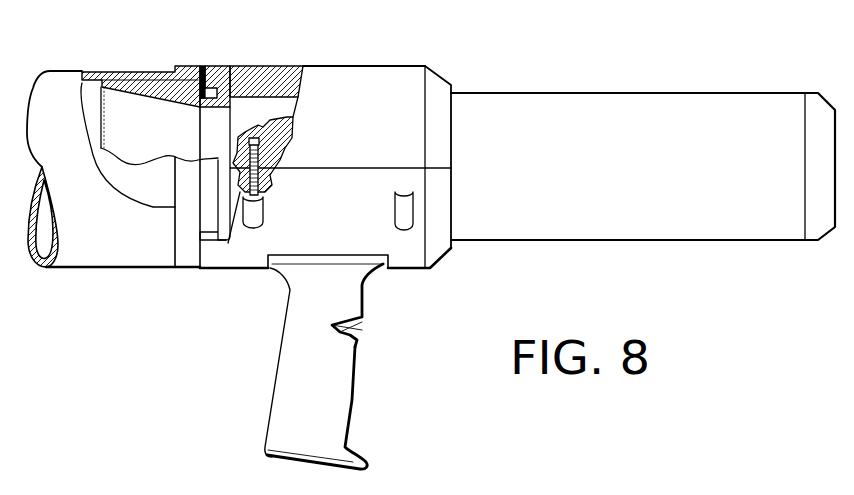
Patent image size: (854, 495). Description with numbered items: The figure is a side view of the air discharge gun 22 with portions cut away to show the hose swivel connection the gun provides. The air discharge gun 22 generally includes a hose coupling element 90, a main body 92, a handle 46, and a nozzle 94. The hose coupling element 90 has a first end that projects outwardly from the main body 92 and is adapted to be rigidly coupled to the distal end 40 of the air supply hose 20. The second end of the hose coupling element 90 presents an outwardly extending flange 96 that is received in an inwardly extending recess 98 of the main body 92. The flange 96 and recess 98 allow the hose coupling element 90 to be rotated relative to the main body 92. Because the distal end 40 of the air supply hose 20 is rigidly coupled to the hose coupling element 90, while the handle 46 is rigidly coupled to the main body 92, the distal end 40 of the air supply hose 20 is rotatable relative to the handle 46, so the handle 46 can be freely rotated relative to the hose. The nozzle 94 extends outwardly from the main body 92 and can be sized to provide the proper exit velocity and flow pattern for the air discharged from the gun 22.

The air supply hose 20 is at (62, 266).
The air discharge gun 22 is at (440, 76).
The distal end 40 is at (62, 70).
The handle 46 is at (353, 405).
The hose coupling element 90 is at (139, 72).
The main body 92 is at (338, 66).
The nozzle 94 is at (657, 93).
The flange 96 is at (233, 66).
The recess 98 is at (217, 66).